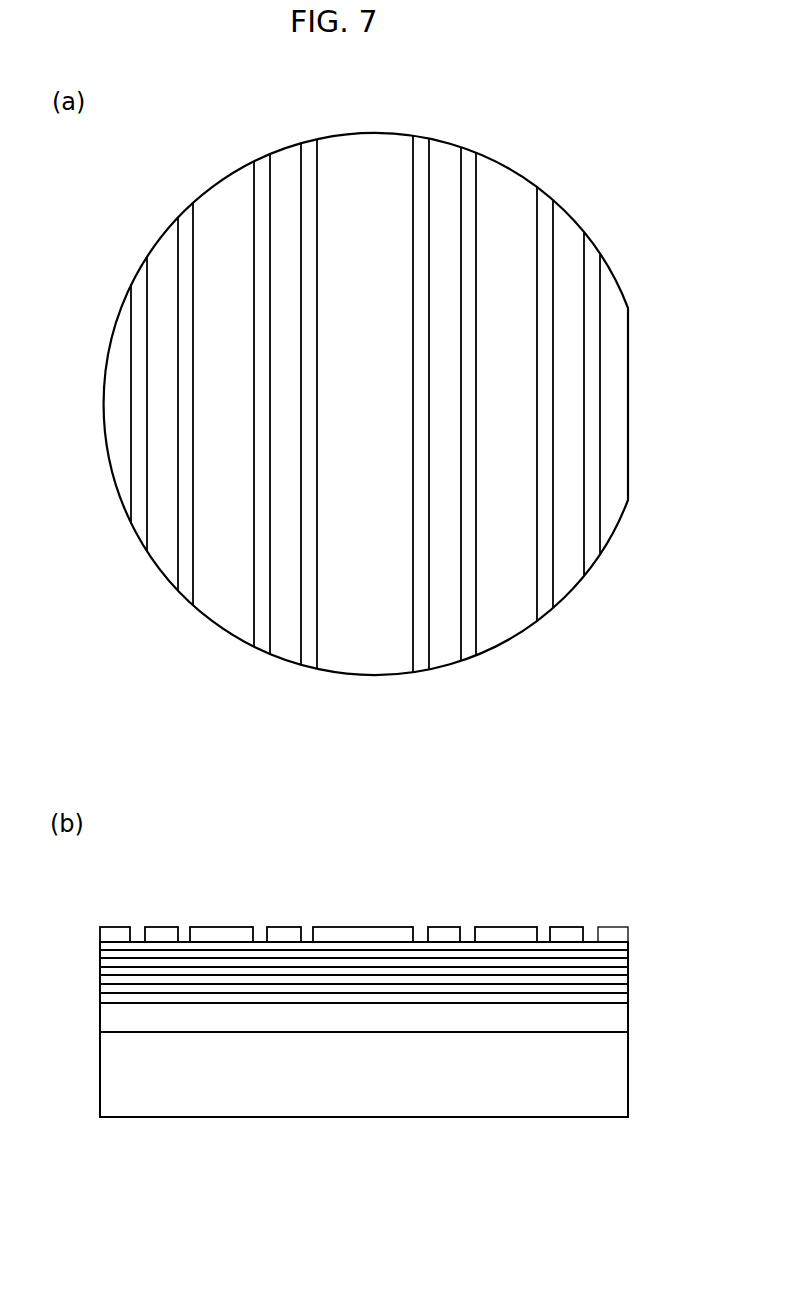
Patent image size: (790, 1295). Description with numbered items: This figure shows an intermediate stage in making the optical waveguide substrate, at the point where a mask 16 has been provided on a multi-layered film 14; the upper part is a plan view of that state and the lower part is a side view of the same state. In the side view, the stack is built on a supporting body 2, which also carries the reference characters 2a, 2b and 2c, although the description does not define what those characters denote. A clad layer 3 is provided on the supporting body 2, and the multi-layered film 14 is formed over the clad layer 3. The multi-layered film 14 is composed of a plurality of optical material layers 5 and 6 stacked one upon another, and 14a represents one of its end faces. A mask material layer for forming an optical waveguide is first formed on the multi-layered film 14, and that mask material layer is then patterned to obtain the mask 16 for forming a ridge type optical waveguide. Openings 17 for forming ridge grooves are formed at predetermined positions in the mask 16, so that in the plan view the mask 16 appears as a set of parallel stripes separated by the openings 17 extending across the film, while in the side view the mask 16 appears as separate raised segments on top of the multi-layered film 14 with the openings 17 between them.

The supporting body 2 is at (617, 1090).
The first main surface of substrate 2a is at (379, 1032).
The second main surface of substrate 2b is at (555, 1117).
The side surface of substrate 2c is at (630, 1058).
The clad layer 3 is at (617, 1020).
The optical material layer 5 is at (100, 966).
The optical material layer 6 is at (100, 975).
The multi-layered film 14 is at (645, 942).
The end face 14a is at (630, 942).
The mask 16 is at (612, 292).
The openings 17 is at (540, 232).